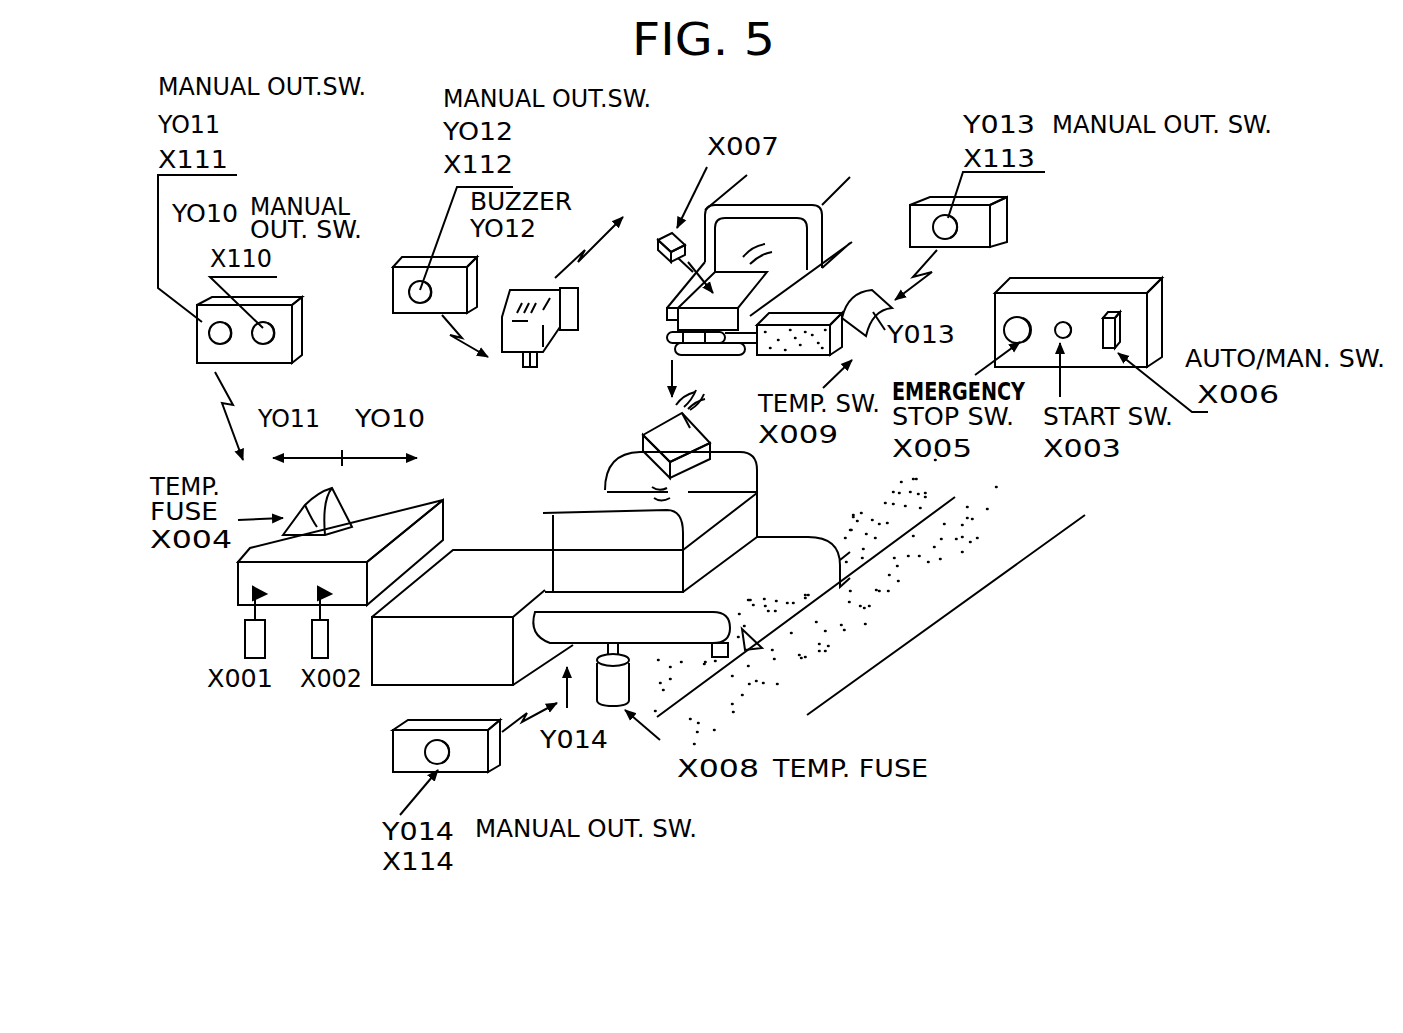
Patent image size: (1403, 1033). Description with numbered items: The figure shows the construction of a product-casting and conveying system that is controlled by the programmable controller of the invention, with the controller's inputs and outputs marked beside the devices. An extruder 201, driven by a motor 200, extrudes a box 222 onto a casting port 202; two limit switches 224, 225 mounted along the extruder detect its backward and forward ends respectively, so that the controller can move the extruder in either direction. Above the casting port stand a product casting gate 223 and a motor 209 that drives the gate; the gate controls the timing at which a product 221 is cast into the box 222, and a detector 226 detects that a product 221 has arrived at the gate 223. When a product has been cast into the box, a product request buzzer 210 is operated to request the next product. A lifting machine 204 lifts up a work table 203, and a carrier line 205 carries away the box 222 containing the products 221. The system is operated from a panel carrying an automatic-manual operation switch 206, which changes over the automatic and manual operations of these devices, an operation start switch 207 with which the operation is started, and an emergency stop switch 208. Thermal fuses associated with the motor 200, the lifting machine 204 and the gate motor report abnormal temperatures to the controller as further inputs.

The motor 200 is at (345, 514).
The extruder 201 is at (377, 514).
The casting port 202 is at (488, 547).
The work table 203 is at (807, 537).
The lifting machine 204 is at (629, 692).
The carrier line 205 is at (993, 578).
The automatic-manual operation switch 206 is at (1120, 283).
The operation start switch 207 is at (1067, 308).
The emergency stop switch 208 is at (1013, 308).
The motor 209 is at (858, 292).
The product request buzzer 210 is at (553, 343).
The product 221 is at (670, 321).
The box 222 is at (590, 508).
The product casting gate 223 is at (787, 347).
The limit switch 224 is at (243, 640).
The limit switch 225 is at (312, 640).
The detector 226 is at (657, 258).